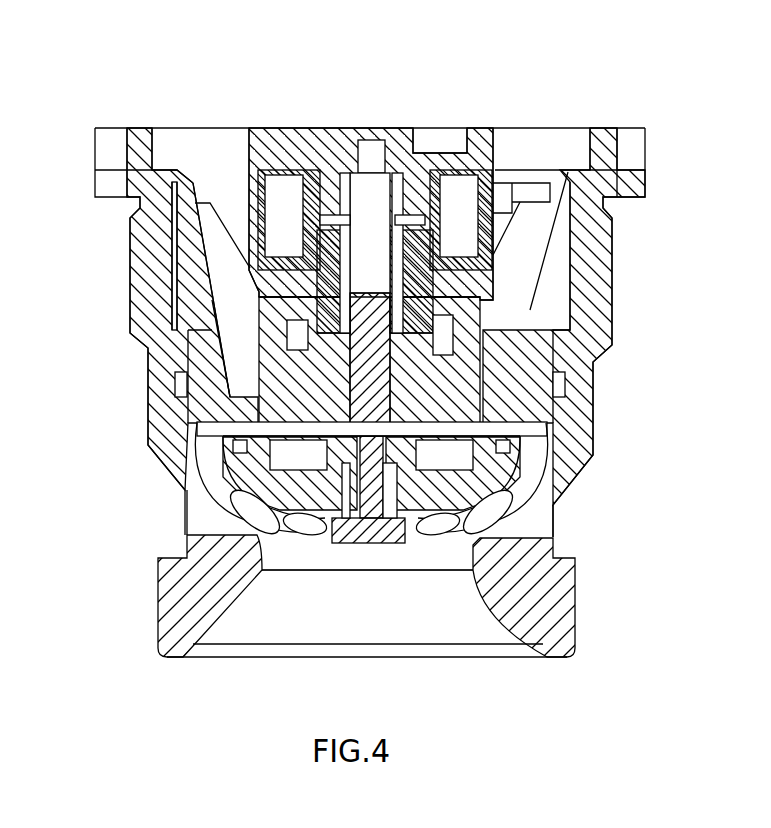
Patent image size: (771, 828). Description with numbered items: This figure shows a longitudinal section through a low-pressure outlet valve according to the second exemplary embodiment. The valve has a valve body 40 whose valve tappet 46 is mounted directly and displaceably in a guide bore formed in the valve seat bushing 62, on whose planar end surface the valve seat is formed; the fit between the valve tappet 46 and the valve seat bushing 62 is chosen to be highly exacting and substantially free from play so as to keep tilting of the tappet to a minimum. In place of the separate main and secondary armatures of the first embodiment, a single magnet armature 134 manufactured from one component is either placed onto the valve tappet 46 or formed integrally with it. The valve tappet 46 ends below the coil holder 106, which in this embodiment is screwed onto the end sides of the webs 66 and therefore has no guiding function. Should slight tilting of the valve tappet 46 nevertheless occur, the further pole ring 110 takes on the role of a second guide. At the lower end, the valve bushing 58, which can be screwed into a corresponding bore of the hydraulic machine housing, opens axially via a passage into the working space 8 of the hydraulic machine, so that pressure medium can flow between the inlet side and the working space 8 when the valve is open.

The coil holder 106 is at (289, 137).
The magnet armature 134 is at (413, 205).
The pole ring 110 is at (482, 277).
The webs 66 is at (592, 345).
The valve tappet 46 is at (390, 392).
The valve seat bushing 62 is at (290, 372).
The valve body 40 is at (260, 488).
The working space 8 is at (437, 598).
The valve bushing 58 is at (555, 595).